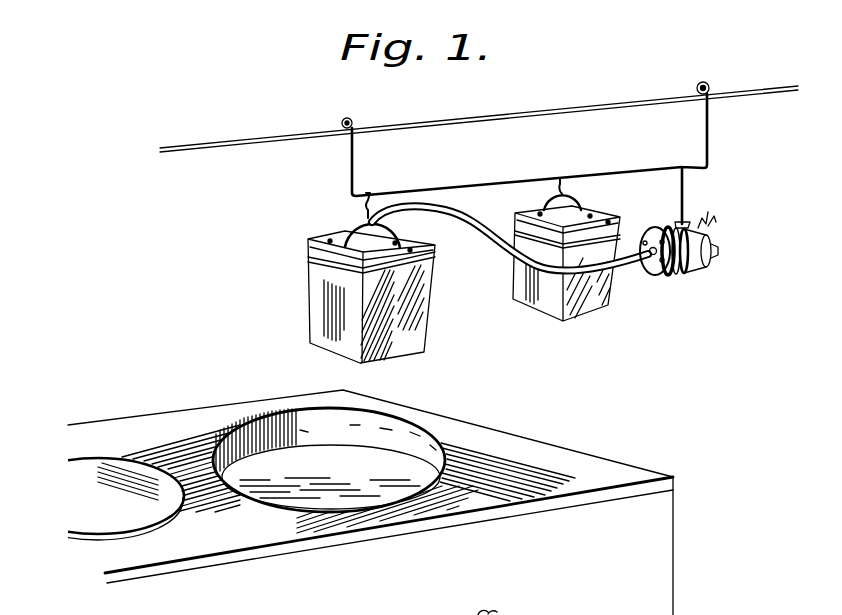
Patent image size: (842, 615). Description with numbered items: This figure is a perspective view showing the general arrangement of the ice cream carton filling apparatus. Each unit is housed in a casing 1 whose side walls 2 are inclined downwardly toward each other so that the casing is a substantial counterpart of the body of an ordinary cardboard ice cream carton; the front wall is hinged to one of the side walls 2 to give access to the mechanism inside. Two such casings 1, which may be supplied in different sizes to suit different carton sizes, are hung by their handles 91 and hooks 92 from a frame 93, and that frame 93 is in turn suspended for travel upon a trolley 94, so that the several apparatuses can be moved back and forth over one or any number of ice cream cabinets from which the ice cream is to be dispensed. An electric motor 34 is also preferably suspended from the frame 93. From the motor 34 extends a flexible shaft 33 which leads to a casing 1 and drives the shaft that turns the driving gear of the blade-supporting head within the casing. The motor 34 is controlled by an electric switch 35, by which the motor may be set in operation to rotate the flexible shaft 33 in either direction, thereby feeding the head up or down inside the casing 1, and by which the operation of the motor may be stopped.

The casing 1 is at (405, 342).
The side walls 2 is at (548, 296).
The flexible shaft 33 is at (489, 238).
The electric motor 34 is at (688, 270).
The electric switch 35 is at (702, 232).
The handles 91 is at (355, 223).
The hooks 92 is at (370, 193).
The frame 93 is at (521, 180).
The trolley 94 is at (553, 108).